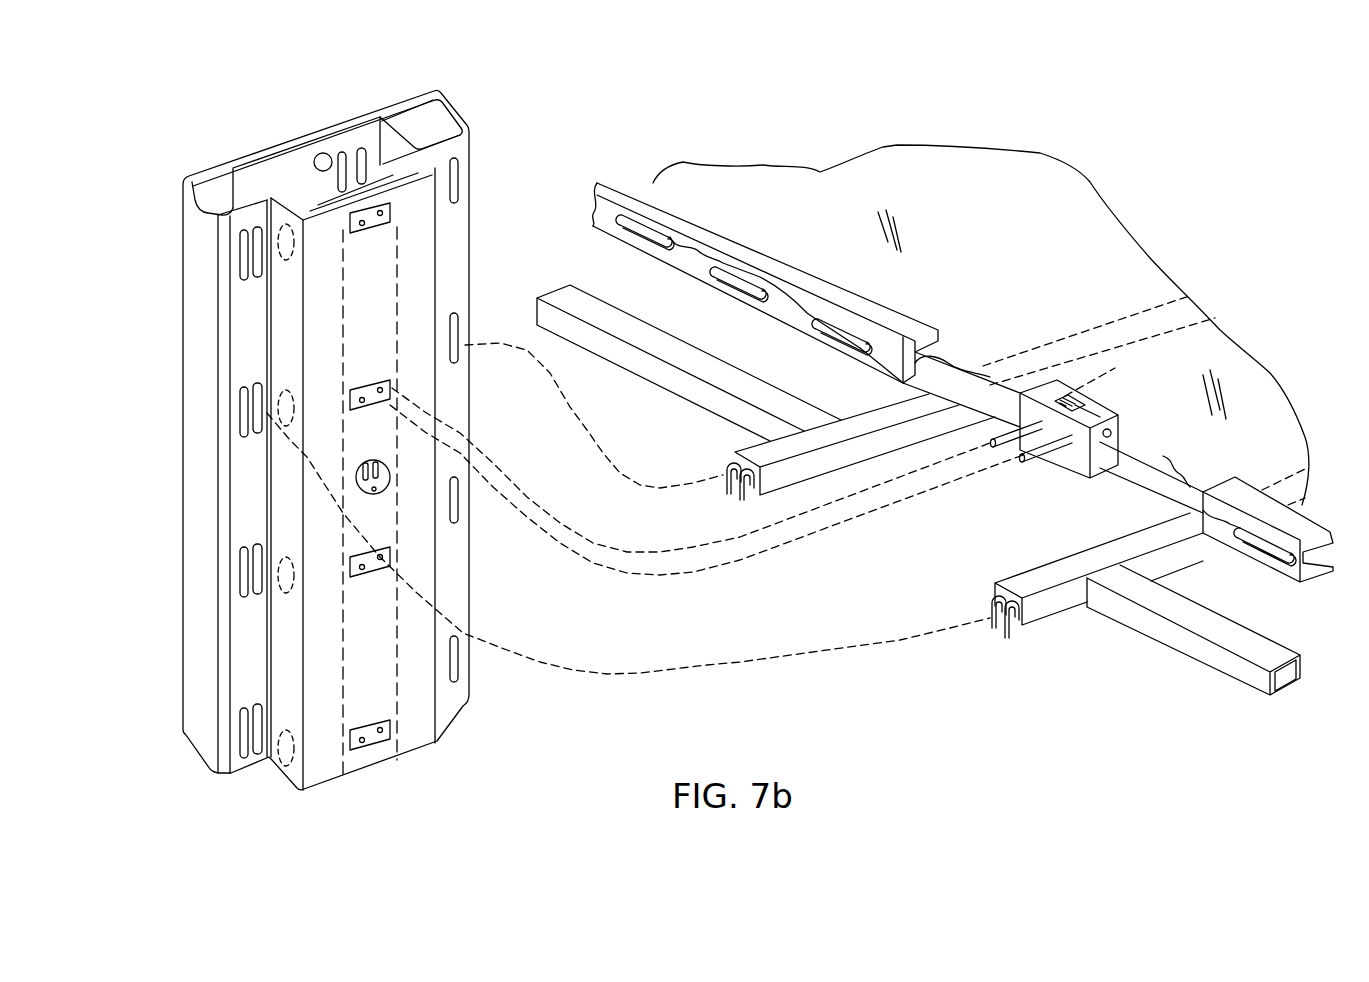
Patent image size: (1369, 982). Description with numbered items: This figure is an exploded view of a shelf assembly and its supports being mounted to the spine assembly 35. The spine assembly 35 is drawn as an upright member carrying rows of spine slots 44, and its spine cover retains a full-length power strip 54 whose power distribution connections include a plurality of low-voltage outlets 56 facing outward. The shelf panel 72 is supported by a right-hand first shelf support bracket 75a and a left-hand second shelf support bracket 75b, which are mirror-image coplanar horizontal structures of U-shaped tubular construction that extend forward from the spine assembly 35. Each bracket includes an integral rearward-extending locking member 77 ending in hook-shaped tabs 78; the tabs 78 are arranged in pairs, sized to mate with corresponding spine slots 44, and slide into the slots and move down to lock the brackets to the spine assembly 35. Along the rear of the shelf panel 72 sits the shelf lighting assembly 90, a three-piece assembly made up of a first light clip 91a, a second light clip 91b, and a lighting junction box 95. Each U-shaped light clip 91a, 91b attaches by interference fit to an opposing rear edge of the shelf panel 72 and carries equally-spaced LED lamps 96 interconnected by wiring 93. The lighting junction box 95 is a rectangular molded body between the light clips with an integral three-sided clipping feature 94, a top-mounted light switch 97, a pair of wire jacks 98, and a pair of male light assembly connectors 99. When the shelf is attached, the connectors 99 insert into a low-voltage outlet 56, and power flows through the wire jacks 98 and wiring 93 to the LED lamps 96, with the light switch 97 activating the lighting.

The spine assembly 35 is at (183, 195).
The spine slot 44 is at (460, 183).
The power strip 54 is at (350, 250).
The low-voltage outlet 56 is at (372, 224).
The shelf panel 72 is at (695, 173).
The first shelf support bracket 75a is at (847, 423).
The second shelf support bracket 75b is at (1125, 551).
The locking member 77 is at (790, 475).
The tab 78 is at (735, 491).
The shelf lighting assembly 90 is at (952, 381).
The first light clip 91a is at (944, 389).
The second light clip 91b is at (1293, 570).
The wiring 93 is at (788, 292).
The clipping feature 94 is at (1099, 359).
The lighting junction box 95 is at (1100, 392).
The LED lamp 96 is at (651, 232).
The light switch 97 is at (1063, 389).
The wire jack 98 is at (1111, 431).
The light assembly connector 99 is at (1022, 462).